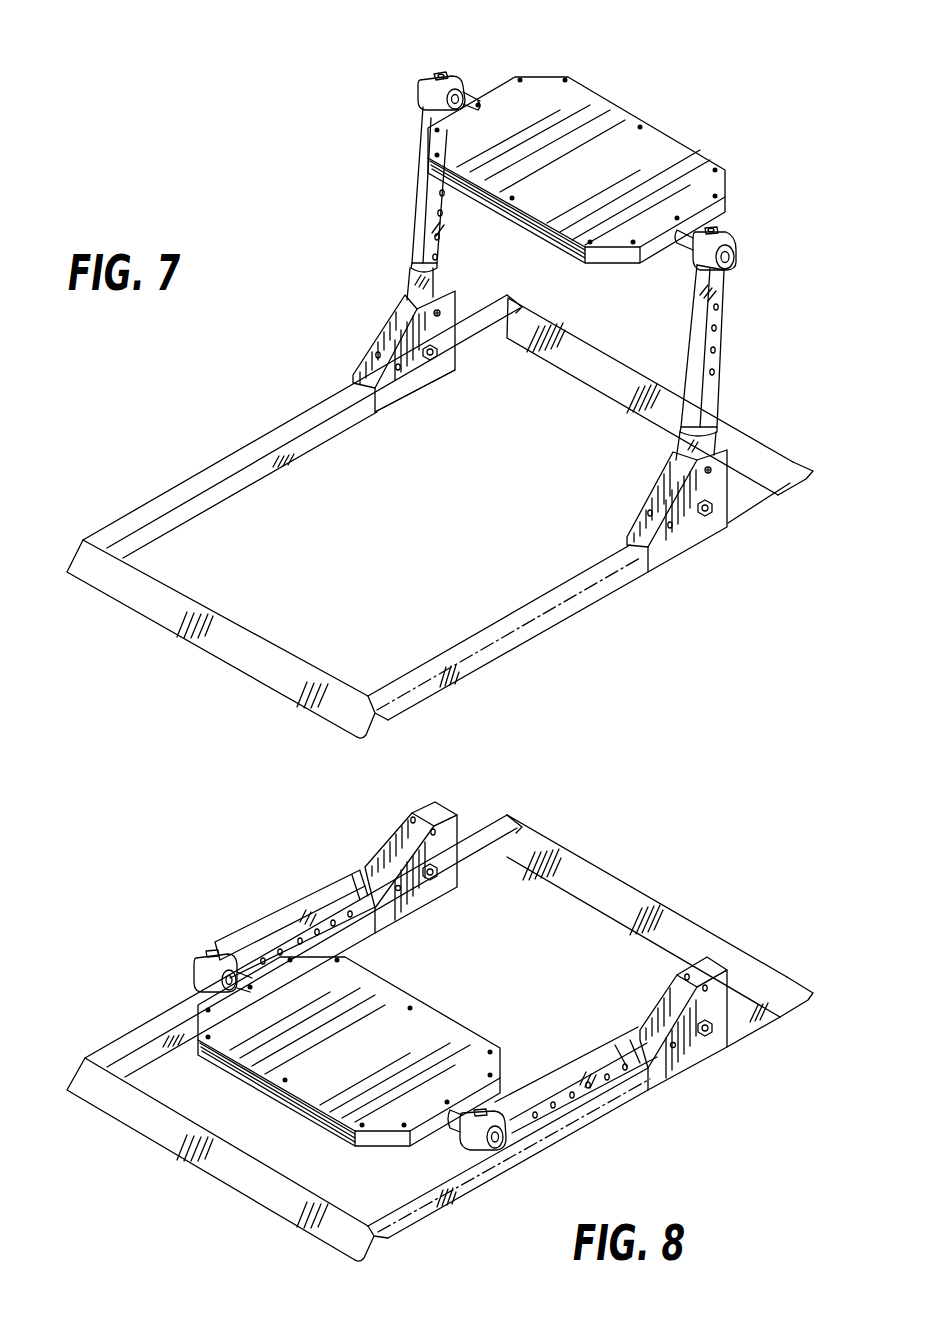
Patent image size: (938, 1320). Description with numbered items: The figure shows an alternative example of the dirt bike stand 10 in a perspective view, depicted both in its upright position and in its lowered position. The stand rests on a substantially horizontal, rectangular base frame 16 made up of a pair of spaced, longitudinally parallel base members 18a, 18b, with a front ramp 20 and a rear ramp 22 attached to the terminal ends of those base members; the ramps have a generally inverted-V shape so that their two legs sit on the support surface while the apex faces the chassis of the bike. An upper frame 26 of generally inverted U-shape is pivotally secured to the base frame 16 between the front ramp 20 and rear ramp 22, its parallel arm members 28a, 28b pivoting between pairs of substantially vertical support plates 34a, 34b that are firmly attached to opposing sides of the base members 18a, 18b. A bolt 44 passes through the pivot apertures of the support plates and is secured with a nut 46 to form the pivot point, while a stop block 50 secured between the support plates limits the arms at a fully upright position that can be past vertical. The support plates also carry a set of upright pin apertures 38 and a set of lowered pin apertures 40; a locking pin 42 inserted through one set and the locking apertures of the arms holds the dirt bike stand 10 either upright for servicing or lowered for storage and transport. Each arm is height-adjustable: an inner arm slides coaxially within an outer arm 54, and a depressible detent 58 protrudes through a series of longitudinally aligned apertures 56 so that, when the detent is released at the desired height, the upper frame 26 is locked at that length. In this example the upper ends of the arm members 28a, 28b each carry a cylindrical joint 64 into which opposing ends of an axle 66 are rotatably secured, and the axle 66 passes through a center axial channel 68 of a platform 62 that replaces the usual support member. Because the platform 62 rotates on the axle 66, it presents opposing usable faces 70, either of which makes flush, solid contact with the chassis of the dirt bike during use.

In FIG. 7, the dirt bike stand 10 is at (758, 83).
In FIG. 8, the dirt bike stand 10 is at (104, 837).
In FIG. 7, the base frame 16 is at (138, 475).
In FIG. 8, the base frame 16 is at (110, 1177).
In FIG. 8, the base member 18a is at (147, 1040).
In FIG. 8, the base member 18b is at (468, 1183).
In FIG. 7, the front ramp 20 is at (593, 362).
In FIG. 8, the front ramp 20 is at (597, 883).
In FIG. 7, the rear ramp 22 is at (250, 657).
In FIG. 8, the rear ramp 22 is at (252, 1180).
In FIG. 7, the upper frame 26 is at (776, 317).
In FIG. 7, the arm member 28a is at (423, 182).
In FIG. 7, the arm member 28b is at (720, 343).
In FIG. 7, the support plate 34a is at (378, 338).
In FIG. 7, the support plate 34b is at (432, 395).
In FIG. 8, the upright pin apertures 38 is at (443, 806).
In FIG. 7, the lowered pin apertures 40 is at (640, 520).
In FIG. 8, the locking pin 42 is at (709, 1038).
In FIG. 7, the bolt 44 is at (440, 356).
In FIG. 7, the nut 46 is at (710, 508).
In FIG. 8, the stop block 50 is at (717, 963).
In FIG. 8, the outer arm 54 is at (268, 933).
In FIG. 8, the apertures 56 is at (333, 917).
In FIG. 8, the depressible detent 58 is at (625, 1068).
In FIG. 7, the platform 62 is at (598, 177).
In FIG. 8, the platform 62 is at (366, 1059).
In FIG. 7, the cylindrical joint 64 is at (425, 83).
In FIG. 7, the axle 66 is at (468, 100).
In FIG. 7, the center axial channel 68 is at (680, 237).
In FIG. 7, the usable faces 70 is at (654, 147).